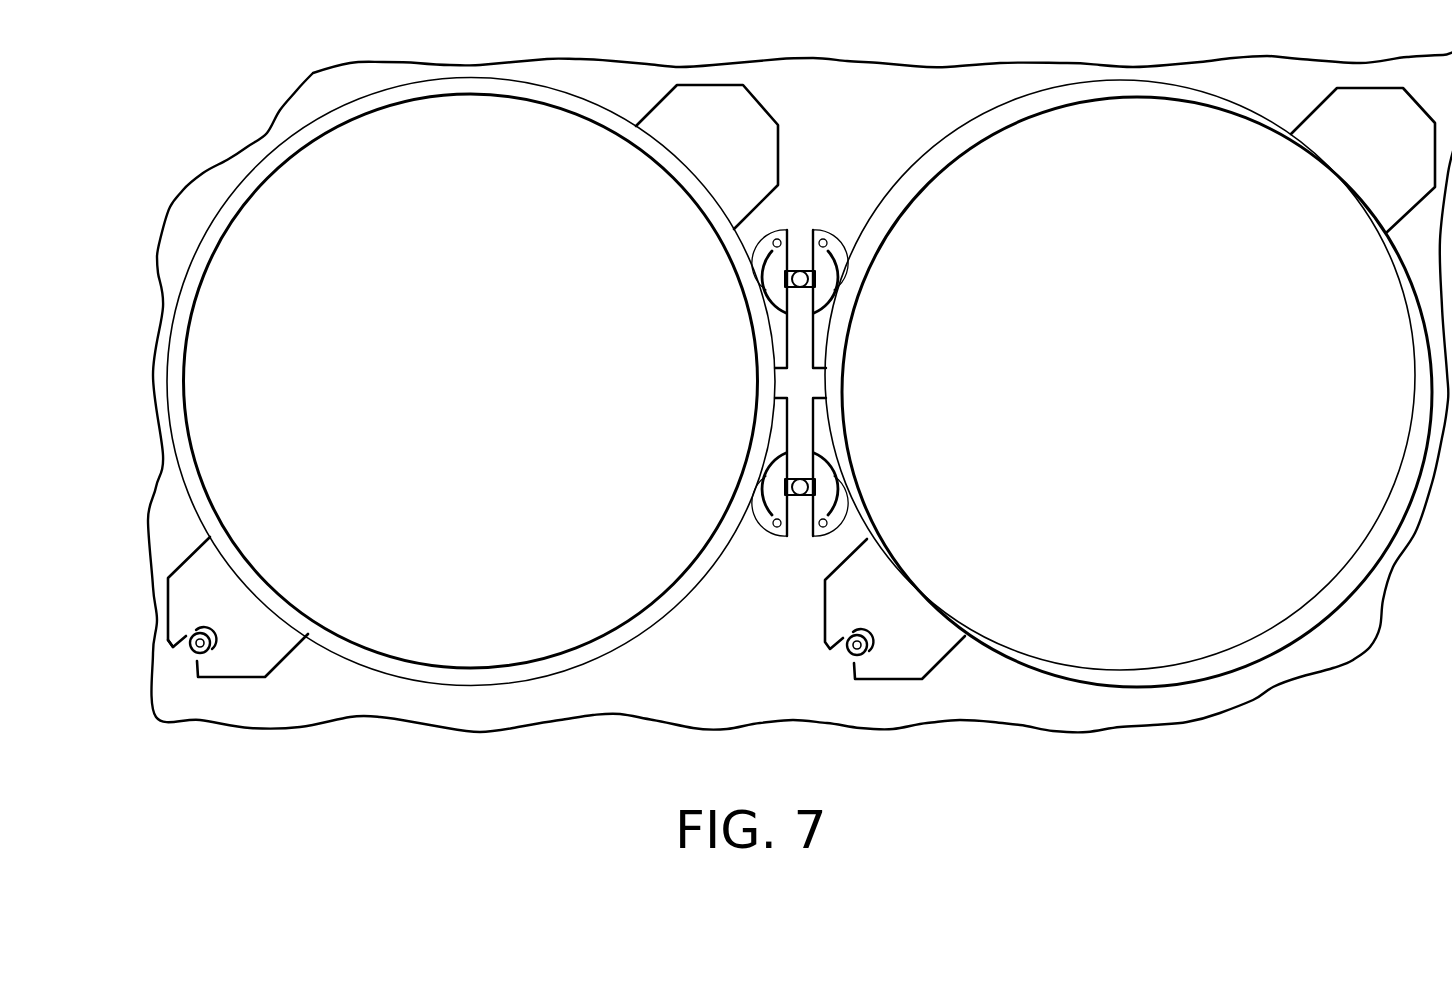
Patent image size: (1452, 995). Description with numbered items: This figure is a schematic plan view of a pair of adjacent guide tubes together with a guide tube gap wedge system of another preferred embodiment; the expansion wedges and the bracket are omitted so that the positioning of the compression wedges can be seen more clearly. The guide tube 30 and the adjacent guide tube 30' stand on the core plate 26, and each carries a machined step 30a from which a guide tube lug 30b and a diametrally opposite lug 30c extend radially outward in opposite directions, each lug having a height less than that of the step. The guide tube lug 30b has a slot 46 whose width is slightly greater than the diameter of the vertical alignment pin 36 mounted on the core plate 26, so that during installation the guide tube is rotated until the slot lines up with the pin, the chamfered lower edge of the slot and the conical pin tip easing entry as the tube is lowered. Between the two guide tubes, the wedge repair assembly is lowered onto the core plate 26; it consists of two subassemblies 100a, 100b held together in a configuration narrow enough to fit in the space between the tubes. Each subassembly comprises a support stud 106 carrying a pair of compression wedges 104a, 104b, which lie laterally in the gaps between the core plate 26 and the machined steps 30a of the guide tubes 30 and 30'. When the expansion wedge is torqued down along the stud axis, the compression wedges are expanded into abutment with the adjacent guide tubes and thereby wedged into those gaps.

The core plate 26 is at (515, 732).
The guide tube 30 is at (471, 381).
The adjacent guide tube 30' is at (1137, 392).
The machined step 30a is at (215, 222).
The guide tube lug 30b is at (707, 84).
The lug 30c is at (236, 679).
The vertical alignment pin 36 is at (195, 641).
The slot 46 is at (197, 663).
The subassembly 100a is at (816, 200).
The subassembly 100b is at (782, 560).
The compression wedge 104a is at (762, 255).
The compression wedge 104b is at (842, 255).
The support stud 106 is at (818, 308).